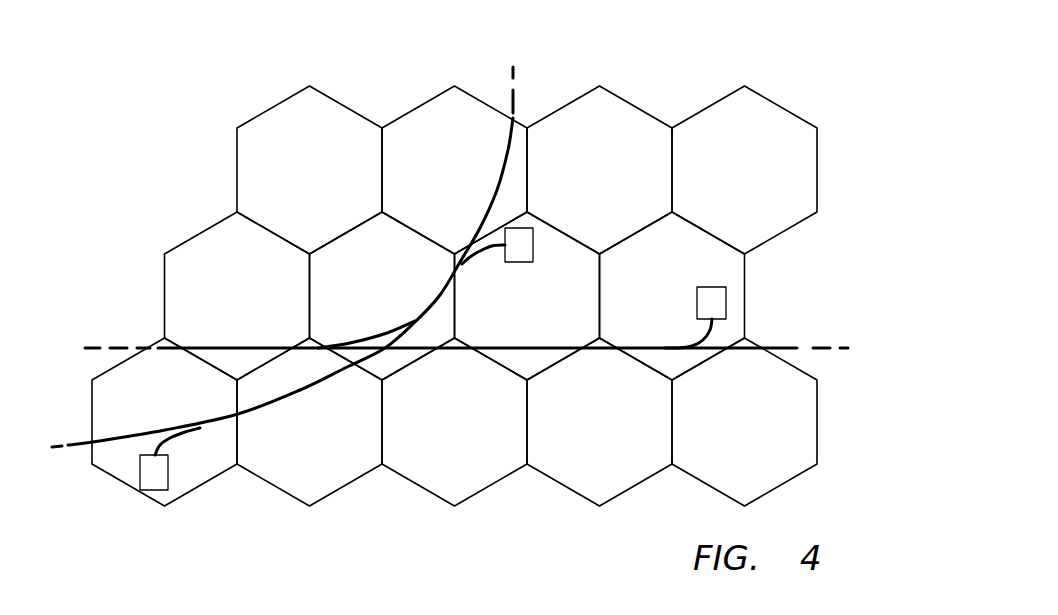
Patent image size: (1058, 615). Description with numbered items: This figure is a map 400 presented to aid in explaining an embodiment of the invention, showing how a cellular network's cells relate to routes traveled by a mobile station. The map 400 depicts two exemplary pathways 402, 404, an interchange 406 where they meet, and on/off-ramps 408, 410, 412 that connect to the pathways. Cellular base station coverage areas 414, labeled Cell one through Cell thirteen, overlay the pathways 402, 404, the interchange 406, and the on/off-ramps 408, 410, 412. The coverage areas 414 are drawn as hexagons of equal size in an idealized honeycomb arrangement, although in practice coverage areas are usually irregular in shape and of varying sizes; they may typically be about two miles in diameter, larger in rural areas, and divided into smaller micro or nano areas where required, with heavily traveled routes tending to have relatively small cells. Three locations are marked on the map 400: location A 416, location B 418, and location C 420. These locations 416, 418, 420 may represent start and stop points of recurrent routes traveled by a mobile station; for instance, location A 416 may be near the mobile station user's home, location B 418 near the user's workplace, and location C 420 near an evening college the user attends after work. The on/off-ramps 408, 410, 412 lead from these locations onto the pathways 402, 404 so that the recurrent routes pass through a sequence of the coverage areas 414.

The map 400 is at (679, 76).
The pathway 402 is at (79, 449).
The pathway 404 is at (798, 347).
The interchange 406 is at (366, 326).
The on/off-ramp 408 is at (193, 451).
The on/off-ramp 410 is at (671, 329).
The on/off-ramp 412 is at (490, 256).
The cellular base station coverage areas 414 is at (491, 488).
The location A 416 is at (140, 479).
The location B 418 is at (722, 274).
The location C 420 is at (535, 248).